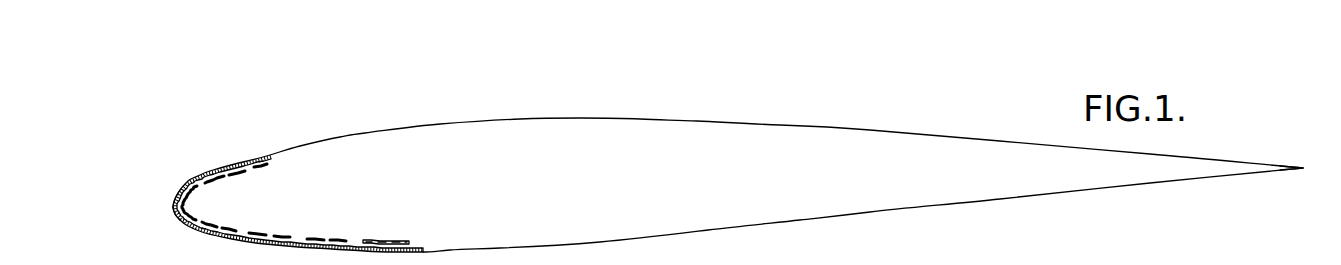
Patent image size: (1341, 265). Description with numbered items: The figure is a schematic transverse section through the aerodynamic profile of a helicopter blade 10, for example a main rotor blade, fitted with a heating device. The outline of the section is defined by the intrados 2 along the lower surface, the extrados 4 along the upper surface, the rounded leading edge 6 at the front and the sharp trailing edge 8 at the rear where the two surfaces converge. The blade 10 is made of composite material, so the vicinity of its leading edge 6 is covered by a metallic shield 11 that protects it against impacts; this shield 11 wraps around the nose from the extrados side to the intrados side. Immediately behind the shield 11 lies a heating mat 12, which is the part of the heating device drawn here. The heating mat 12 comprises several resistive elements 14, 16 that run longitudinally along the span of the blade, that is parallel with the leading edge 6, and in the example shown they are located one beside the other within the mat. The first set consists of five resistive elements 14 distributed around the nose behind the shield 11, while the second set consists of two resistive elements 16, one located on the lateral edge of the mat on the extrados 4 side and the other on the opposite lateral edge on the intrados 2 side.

The intrados 2 is at (708, 230).
The extrados 4 is at (697, 121).
The leading edge 6 is at (175, 205).
The trailing edge 8 is at (1303, 168).
The blade 10 is at (741, 177).
The metallic shield 11 is at (195, 225).
The heating mat 12 is at (217, 174).
The resistive elements 14 is at (332, 238).
The resistive elements 16 is at (386, 240).